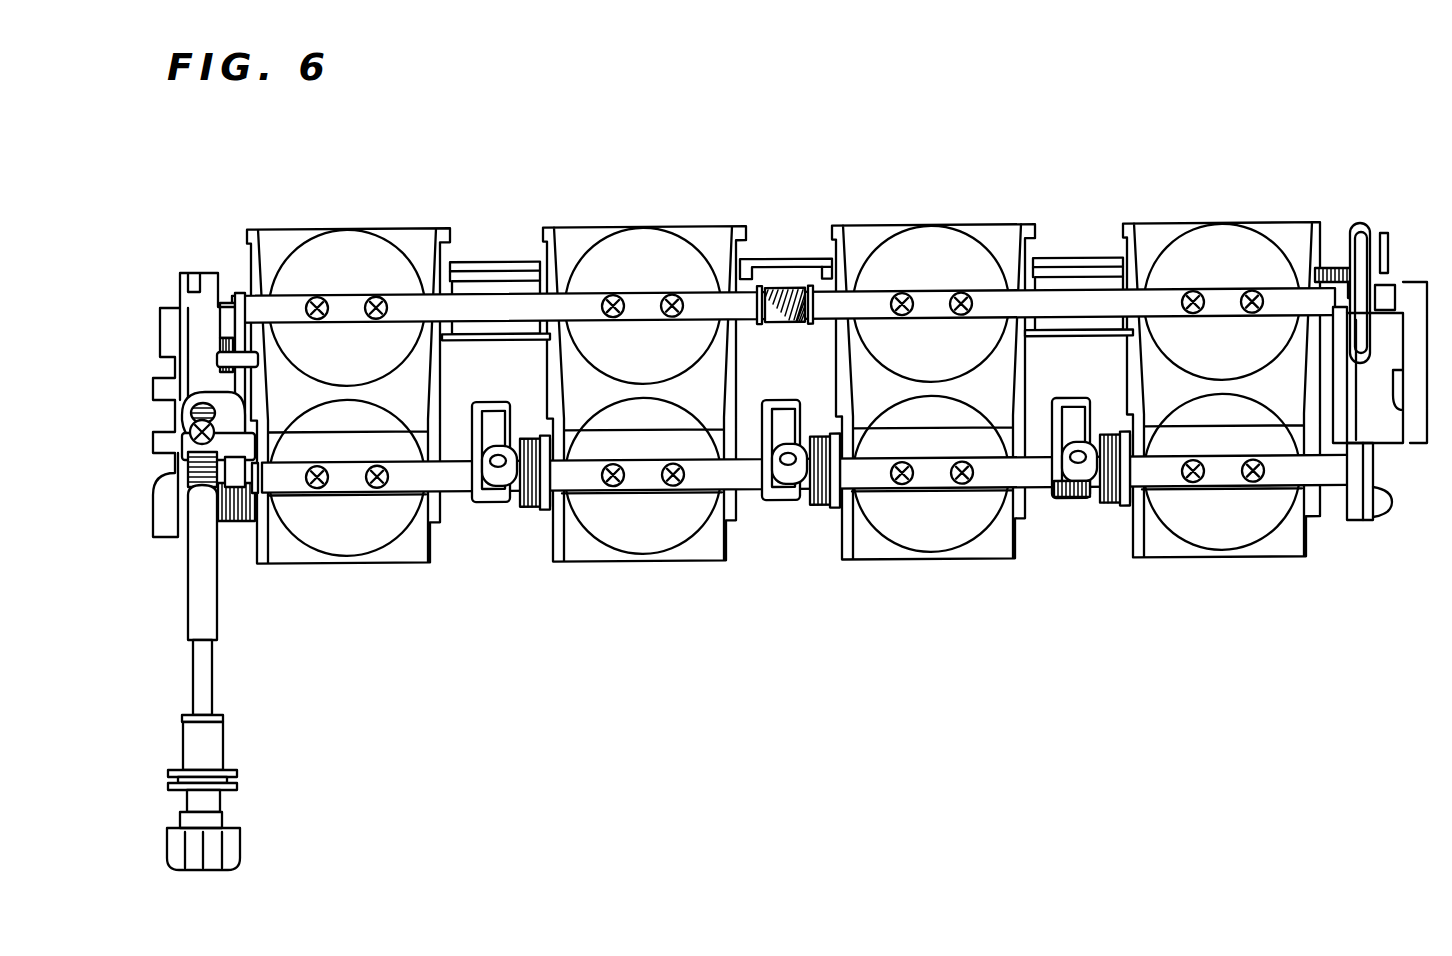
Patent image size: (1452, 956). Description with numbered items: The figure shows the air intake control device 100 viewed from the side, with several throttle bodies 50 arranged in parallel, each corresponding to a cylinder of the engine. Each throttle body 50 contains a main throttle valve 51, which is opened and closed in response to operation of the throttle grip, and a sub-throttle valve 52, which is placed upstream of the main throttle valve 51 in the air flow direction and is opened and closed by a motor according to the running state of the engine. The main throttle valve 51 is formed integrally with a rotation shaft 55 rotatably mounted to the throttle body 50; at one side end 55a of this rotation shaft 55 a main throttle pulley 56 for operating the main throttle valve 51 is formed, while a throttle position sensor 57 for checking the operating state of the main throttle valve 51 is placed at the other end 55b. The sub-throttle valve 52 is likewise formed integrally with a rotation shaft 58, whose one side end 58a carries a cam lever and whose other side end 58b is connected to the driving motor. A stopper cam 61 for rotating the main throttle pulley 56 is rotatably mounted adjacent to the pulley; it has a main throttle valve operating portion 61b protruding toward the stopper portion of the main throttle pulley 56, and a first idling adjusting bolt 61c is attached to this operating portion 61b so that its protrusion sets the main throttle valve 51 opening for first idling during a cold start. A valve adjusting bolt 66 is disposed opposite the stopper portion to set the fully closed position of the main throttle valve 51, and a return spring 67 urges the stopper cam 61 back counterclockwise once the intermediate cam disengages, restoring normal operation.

The air intake control device 100 is at (844, 207).
The throttle body 50 is at (293, 220).
The main throttle valve 51 is at (364, 537).
The sub-throttle valve 52 is at (349, 262).
The rotation shaft 55 is at (450, 480).
The one side end of the rotation shaft 55a is at (282, 547).
The other end of the rotation shaft 55b is at (1332, 473).
The main throttle pulley 56 is at (183, 546).
The throttle position sensor 57 is at (1410, 478).
The rotation shaft 58 is at (412, 310).
The one side end of the rotation shaft 58a is at (270, 312).
The other side end of the rotation shaft 58b is at (1322, 300).
The stopper cam 61 is at (213, 400).
The main throttle valve operating portion 61b is at (217, 400).
The first idling adjusting bolt 61c is at (217, 433).
The valve adjusting bolt 66 is at (213, 742).
The return spring 67 is at (205, 275).